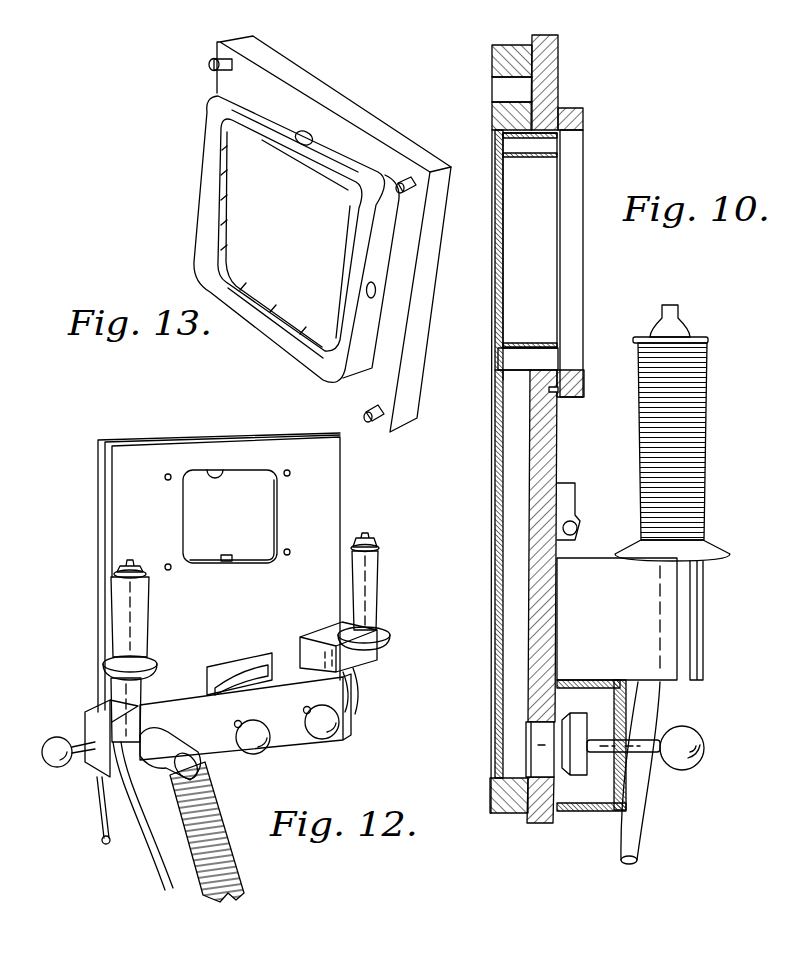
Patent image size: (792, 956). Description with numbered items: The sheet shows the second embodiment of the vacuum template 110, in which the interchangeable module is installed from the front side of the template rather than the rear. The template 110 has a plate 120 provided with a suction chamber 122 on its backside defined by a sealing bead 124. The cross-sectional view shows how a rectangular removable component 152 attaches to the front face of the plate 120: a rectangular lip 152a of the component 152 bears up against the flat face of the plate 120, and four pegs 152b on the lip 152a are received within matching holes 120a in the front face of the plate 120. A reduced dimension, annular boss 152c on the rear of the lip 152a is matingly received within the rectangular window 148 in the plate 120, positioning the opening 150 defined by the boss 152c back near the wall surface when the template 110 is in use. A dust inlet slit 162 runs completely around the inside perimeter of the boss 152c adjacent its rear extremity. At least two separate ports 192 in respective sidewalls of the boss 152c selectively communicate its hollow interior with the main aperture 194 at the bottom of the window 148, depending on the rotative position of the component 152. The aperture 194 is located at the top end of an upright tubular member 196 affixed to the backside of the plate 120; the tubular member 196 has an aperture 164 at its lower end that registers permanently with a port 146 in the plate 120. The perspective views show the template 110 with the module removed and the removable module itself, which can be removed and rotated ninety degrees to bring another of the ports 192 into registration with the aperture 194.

In FIG. 12, the template 110 is at (90, 540).
In FIG. 10, the template 110 is at (615, 85).
In FIG. 12, the plate 120 is at (333, 498).
In FIG. 10, the plate 120 is at (560, 54).
In FIG. 12, the holes 120a is at (142, 467).
In FIG. 10, the suction chamber 122 is at (507, 90).
In FIG. 10, the sealing bead 124 is at (508, 45).
In FIG. 10, the port 146 is at (540, 762).
In FIG. 12, the rectangular window 148 is at (222, 470).
In FIG. 13, the opening 150 is at (270, 148).
In FIG. 10, the opening 150 is at (501, 285).
In FIG. 13, the removable component 152 is at (185, 168).
In FIG. 10, the removable component 152 is at (588, 128).
In FIG. 13, the rectangular lip 152a is at (283, 73).
In FIG. 10, the rectangular lip 152a is at (578, 118).
In FIG. 13, the pegs 152b is at (373, 424).
In FIG. 13, the annular boss 152c is at (282, 337).
In FIG. 10, the annular boss 152c is at (517, 160).
In FIG. 13, the dust inlet slit 162 is at (221, 188).
In FIG. 10, the dust inlet slit 162 is at (503, 340).
In FIG. 10, the aperture 164 is at (522, 758).
In FIG. 13, the ports 192 is at (308, 131).
In FIG. 10, the ports 192 is at (522, 370).
In FIG. 12, the aperture 194 is at (231, 557).
In FIG. 10, the aperture 194 is at (521, 372).
In FIG. 10, the tubular member 196 is at (490, 527).